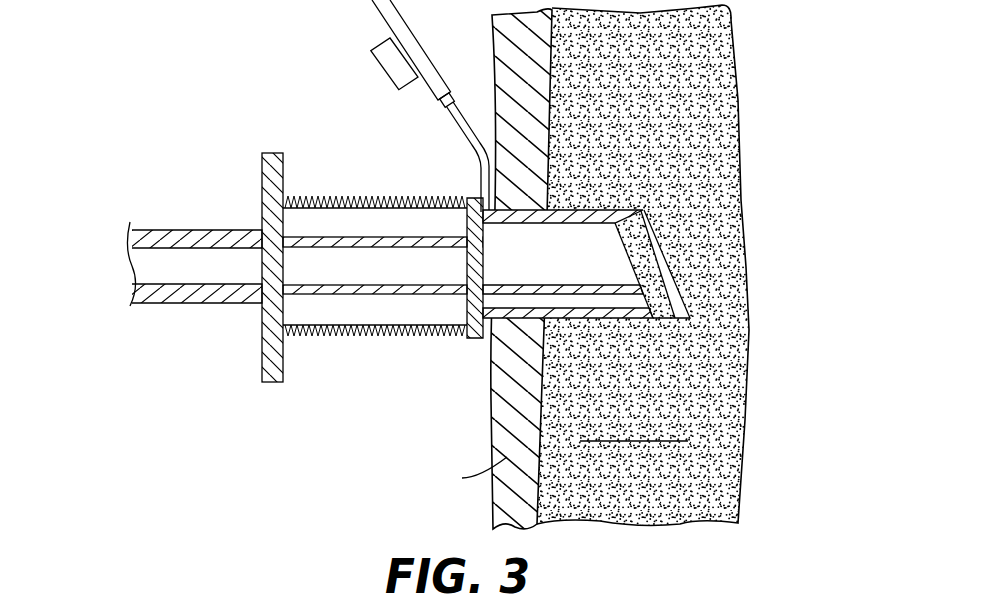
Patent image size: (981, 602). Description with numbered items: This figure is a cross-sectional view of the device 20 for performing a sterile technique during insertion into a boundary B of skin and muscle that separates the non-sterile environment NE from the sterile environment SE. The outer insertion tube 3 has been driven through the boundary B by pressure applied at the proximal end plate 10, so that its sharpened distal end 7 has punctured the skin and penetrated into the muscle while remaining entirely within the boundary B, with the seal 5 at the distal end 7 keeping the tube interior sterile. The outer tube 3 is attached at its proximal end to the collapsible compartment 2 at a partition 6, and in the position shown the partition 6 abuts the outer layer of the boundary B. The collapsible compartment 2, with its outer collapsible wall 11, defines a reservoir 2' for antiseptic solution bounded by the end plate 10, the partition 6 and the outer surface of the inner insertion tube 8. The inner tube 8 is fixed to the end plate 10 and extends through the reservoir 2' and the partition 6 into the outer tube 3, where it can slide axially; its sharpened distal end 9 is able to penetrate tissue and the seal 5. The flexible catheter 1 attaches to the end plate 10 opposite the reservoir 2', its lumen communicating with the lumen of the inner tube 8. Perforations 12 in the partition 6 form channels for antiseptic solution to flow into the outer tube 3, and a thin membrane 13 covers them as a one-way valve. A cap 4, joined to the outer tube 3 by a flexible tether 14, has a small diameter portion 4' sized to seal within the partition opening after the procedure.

The catheter 1 is at (173, 308).
The collapsible compartment 2 is at (375, 163).
The compartment reservoir 2' is at (375, 363).
The outer insertion tube 3 is at (563, 215).
The cap 4 is at (382, 51).
The small diameter portion 4' is at (394, 97).
The seal 5 is at (674, 265).
The partition 6 is at (475, 339).
The sharpened distal end 7 is at (696, 305).
The inner insertion tube 8 is at (391, 297).
The sharpened distal end 9 is at (643, 298).
The proximal end plate 10 is at (262, 387).
The outer collapsible wall 11 is at (351, 180).
The perforations 12 is at (463, 231).
The thin membrane 13 is at (492, 300).
The flexible tether 14 is at (472, 143).
The device 20 is at (88, 172).
The boundary B is at (674, 126).
The sterile environment SE is at (596, 269).
The non-sterile environment NE is at (178, 224).